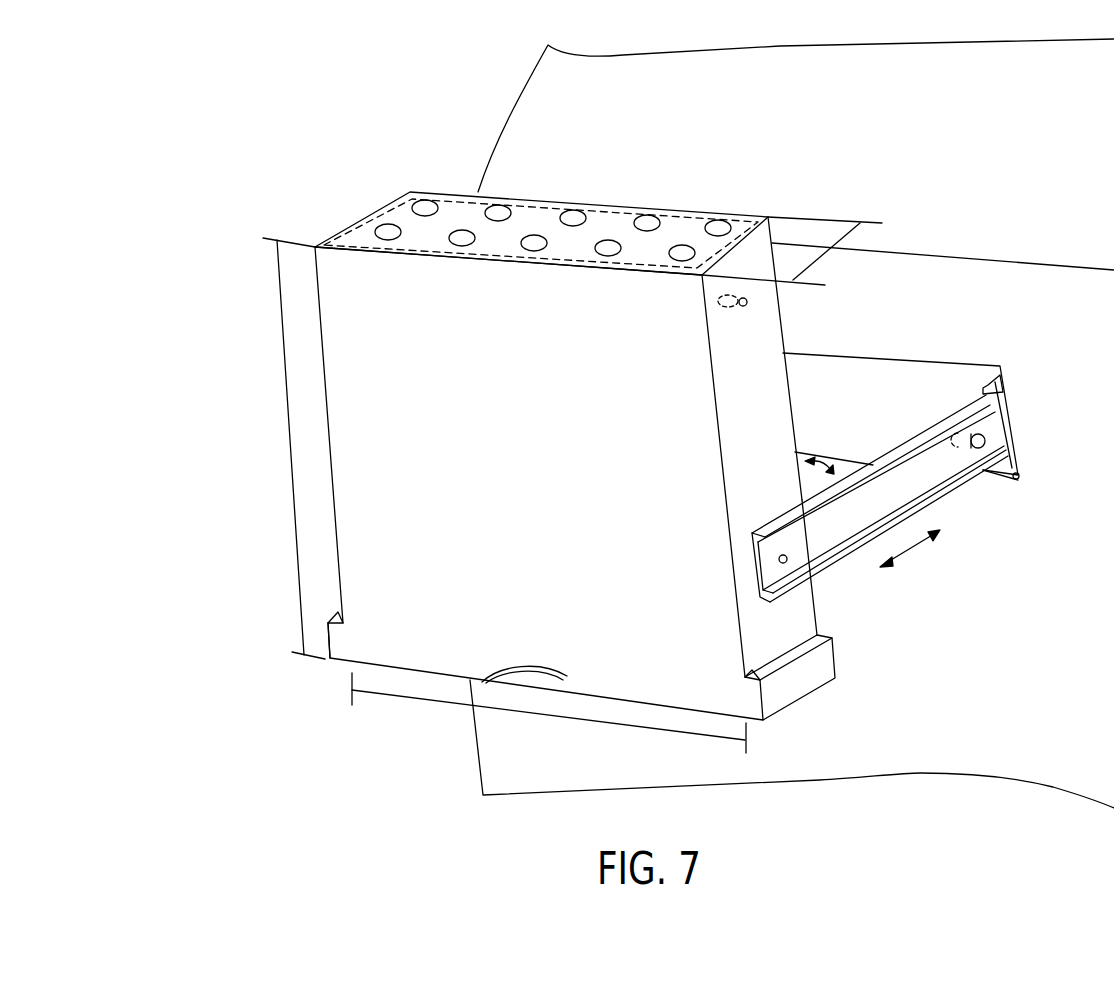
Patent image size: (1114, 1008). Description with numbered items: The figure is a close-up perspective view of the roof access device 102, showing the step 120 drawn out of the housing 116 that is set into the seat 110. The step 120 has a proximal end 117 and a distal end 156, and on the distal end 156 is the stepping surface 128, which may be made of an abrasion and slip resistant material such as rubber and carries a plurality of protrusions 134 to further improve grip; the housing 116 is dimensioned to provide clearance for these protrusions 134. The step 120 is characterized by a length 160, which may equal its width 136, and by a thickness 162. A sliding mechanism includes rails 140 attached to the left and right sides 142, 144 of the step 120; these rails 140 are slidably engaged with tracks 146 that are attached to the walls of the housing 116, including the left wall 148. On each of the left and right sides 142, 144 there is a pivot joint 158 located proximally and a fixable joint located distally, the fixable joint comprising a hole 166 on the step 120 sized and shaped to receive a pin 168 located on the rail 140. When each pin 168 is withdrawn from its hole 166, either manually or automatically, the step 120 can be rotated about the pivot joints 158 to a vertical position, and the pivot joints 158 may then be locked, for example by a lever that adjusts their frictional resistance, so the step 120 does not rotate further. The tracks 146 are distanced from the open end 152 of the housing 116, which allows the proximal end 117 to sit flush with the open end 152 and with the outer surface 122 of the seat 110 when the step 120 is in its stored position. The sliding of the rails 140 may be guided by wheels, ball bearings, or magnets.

The roof access device 102 is at (182, 246).
The seat 110 is at (522, 82).
The housing 116 is at (940, 362).
The proximal end 117 is at (787, 697).
The step 120 is at (337, 663).
The outer surface 122 is at (1059, 599).
The stepping surface 128 is at (347, 237).
The protrusions 134 is at (425, 197).
The width 136 is at (423, 698).
The rails 140 is at (855, 560).
The left side 142 is at (803, 622).
The right side 144 is at (313, 270).
The tracks 146 is at (1000, 383).
The left wall 148 is at (1018, 477).
The open end 152 is at (995, 477).
The distal end 156 is at (385, 202).
The pivot joint 158 is at (779, 556).
The length 160 is at (300, 445).
The thickness 162 is at (820, 260).
The hole 166 is at (735, 307).
The pin 168 is at (958, 435).